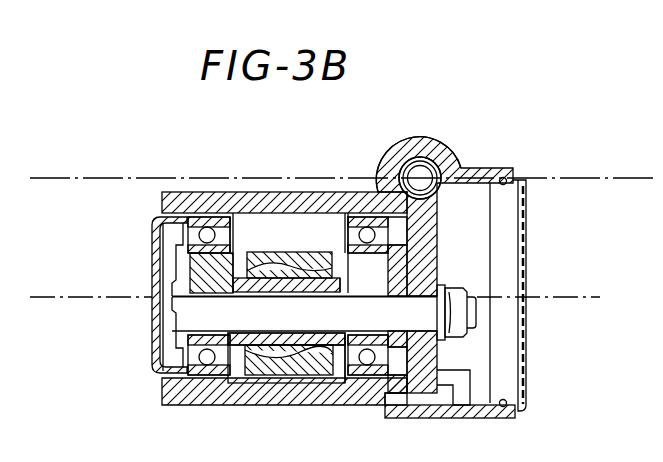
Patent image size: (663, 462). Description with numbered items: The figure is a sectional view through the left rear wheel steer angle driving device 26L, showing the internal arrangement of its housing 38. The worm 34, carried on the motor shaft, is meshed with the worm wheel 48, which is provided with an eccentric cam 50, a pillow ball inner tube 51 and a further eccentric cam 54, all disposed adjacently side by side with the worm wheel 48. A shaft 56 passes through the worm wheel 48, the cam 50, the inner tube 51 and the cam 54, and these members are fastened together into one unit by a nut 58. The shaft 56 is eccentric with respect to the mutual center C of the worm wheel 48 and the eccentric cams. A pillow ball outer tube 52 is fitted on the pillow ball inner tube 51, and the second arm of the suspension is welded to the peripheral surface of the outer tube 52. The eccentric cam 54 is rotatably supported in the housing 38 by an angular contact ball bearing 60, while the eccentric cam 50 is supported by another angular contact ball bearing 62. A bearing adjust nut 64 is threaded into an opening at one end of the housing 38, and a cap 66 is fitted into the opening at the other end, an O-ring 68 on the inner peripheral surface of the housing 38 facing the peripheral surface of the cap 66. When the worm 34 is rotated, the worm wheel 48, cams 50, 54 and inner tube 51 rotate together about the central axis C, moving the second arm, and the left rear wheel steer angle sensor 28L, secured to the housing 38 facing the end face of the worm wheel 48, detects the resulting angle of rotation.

The left rear wheel steer angle driving device 26L is at (192, 160).
The left rear wheel steer angle sensor 28L is at (438, 405).
The worm 34 is at (412, 153).
The housing 38 is at (443, 141).
The worm wheel 48 is at (395, 392).
The eccentric cam 50 is at (342, 250).
The pillow ball inner tube 51 is at (286, 257).
The pillow ball outer tube 52 is at (317, 250).
The eccentric cam 54 is at (262, 255).
The shaft 56 is at (152, 327).
The nut 58 is at (457, 286).
The angular contact ball bearing 60 is at (232, 224).
The angular contact ball bearing 62 is at (345, 222).
The bearing adjust nut 64 is at (150, 237).
The cap 66 is at (526, 388).
The O-ring 68 is at (504, 407).
The mutual center C is at (98, 294).